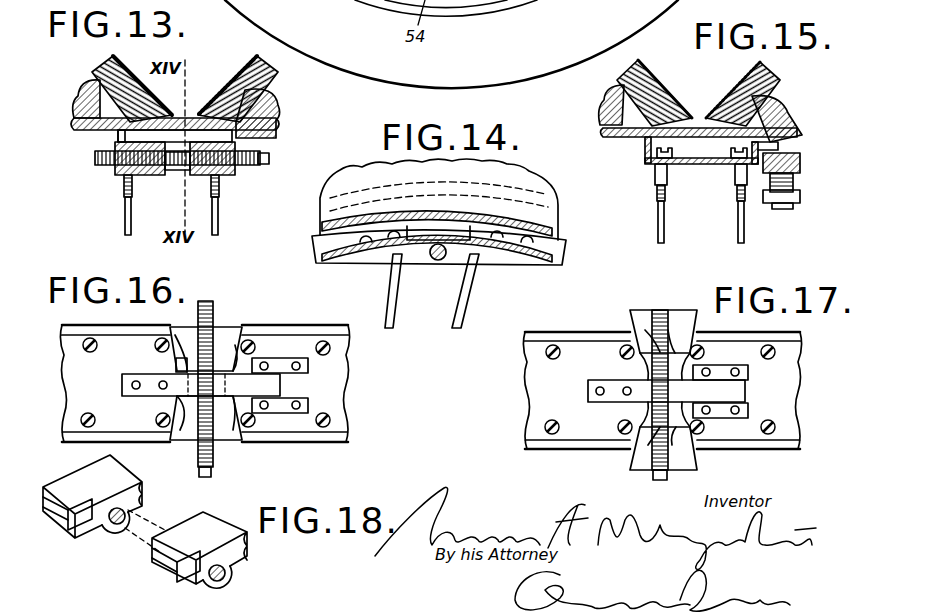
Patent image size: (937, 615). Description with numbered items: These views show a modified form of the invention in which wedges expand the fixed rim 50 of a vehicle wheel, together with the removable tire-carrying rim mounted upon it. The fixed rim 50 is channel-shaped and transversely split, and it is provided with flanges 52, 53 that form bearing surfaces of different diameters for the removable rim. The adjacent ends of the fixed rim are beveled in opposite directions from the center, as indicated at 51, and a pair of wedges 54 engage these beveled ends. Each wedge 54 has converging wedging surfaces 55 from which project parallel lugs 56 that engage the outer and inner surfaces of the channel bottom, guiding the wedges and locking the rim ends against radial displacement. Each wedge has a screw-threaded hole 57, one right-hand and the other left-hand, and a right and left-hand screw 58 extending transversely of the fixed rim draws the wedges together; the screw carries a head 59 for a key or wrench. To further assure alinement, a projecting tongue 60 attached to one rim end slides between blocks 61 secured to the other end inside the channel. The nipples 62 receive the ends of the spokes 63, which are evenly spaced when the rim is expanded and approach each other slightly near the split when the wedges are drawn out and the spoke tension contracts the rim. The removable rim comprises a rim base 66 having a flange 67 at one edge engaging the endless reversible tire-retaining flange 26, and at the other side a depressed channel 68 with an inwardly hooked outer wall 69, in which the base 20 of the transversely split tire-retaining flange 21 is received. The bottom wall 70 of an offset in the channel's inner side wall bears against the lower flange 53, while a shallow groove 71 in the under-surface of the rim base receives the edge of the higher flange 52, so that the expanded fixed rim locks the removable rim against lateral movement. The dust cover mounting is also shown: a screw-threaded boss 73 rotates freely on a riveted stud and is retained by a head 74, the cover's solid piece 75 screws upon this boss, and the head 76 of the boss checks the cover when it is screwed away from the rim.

In FIG. 13, the base of the transversely split tire-retaining flange 20 is at (268, 145).
In FIG. 15, the base of the transversely split tire-retaining flange 20 is at (800, 165).
In FIG. 13, the transversely split tire-retaining flange 21 is at (262, 100).
In FIG. 15, the transversely split tire-retaining flange 21 is at (780, 110).
In FIG. 13, the endless reversible tire-retaining flange 26 is at (96, 78).
In FIG. 15, the endless reversible tire-retaining flange 26 is at (620, 92).
In FIG. 14, the fixed rim 50 is at (352, 265).
In FIG. 15, the fixed rim 50 is at (700, 165).
In FIG. 16, the fixed rim 50 is at (352, 390).
In FIG. 17, the fixed rim 50 is at (527, 392).
In FIG. 16, the beveled ends of the fixed rim 51 is at (175, 332).
In FIG. 17, the beveled ends of the fixed rim 51 is at (645, 372).
In FIG. 13, the higher flange of the fixed rim 52 is at (122, 135).
In FIG. 14, the higher flange of the fixed rim 52 is at (386, 298).
In FIG. 15, the higher flange of the fixed rim 52 is at (645, 148).
In FIG. 16, the higher flange of the fixed rim 52 is at (335, 328).
In FIG. 17, the higher flange of the fixed rim 52 is at (790, 330).
In FIG. 13, the lower flange of the fixed rim 53 is at (226, 82).
In FIG. 15, the lower flange of the fixed rim 53 is at (740, 168).
In FIG. 16, the lower flange of the fixed rim 53 is at (315, 446).
In FIG. 17, the lower flange of the fixed rim 53 is at (795, 455).
In FIG. 13, the wedge 54 is at (146, 176).
In FIG. 14, the wedge 54 is at (424, 272).
In FIG. 15, the wedge 54 is at (712, 238).
In FIG. 16, the wedge 54 is at (225, 337).
In FIG. 17, the wedge 54 is at (672, 470).
In FIG. 18, the wedge 54 is at (145, 519).
In FIG. 17, the converging wedging surfaces 55 is at (632, 320).
In FIG. 18, the converging wedging surfaces 55 is at (70, 515).
In FIG. 16, the parallel lugs 56 is at (176, 362).
In FIG. 17, the parallel lugs 56 is at (655, 320).
In FIG. 18, the parallel lugs 56 is at (80, 530).
In FIG. 18, the screw-threaded hole 57 is at (120, 525).
In FIG. 13, the right and left-hand screw 58 is at (103, 166).
In FIG. 14, the right and left-hand screw 58 is at (440, 262).
In FIG. 16, the right and left-hand screw 58 is at (202, 306).
In FIG. 17, the right and left-hand screw 58 is at (670, 402).
In FIG. 13, the head 59 is at (266, 166).
In FIG. 16, the head 59 is at (206, 476).
In FIG. 17, the head 59 is at (655, 478).
In FIG. 13, the projecting tongue 60 is at (172, 170).
In FIG. 14, the projecting tongue 60 is at (460, 232).
In FIG. 16, the projecting tongue 60 is at (168, 396).
In FIG. 17, the projecting tongue 60 is at (747, 392).
In FIG. 14, the blocks 61 is at (512, 264).
In FIG. 16, the blocks 61 is at (290, 360).
In FIG. 17, the blocks 61 is at (728, 364).
In FIG. 14, the nipples 62 is at (393, 262).
In FIG. 15, the nipples 62 is at (653, 178).
In FIG. 16, the nipples 62 is at (90, 353).
In FIG. 17, the nipples 62 is at (548, 355).
In FIG. 13, the spokes 63 is at (123, 218).
In FIG. 14, the spokes 63 is at (451, 328).
In FIG. 15, the spokes 63 is at (652, 228).
In FIG. 13, the rim base 66 is at (180, 122).
In FIG. 14, the rim base 66 is at (437, 222).
In FIG. 15, the rim base 66 is at (698, 126).
In FIG. 13, the flange 67 is at (80, 110).
In FIG. 15, the flange 67 is at (604, 118).
In FIG. 13, the depressed channel 68 is at (274, 112).
In FIG. 15, the depressed channel 68 is at (792, 120).
In FIG. 13, the inwardly hooked outer wall 69 is at (278, 128).
In FIG. 15, the inwardly hooked outer wall 69 is at (797, 135).
In FIG. 13, the bottom wall of the offset 70 is at (175, 137).
In FIG. 15, the bottom wall of the offset 70 is at (735, 98).
In FIG. 13, the shallow groove 71 is at (112, 130).
In FIG. 15, the shallow groove 71 is at (660, 90).
In FIG. 15, the screw-threaded boss 73 is at (800, 200).
In FIG. 15, the head 74 is at (783, 210).
In FIG. 15, the solid piece 75 is at (766, 182).
In FIG. 15, the head of the boss 76 is at (796, 208).